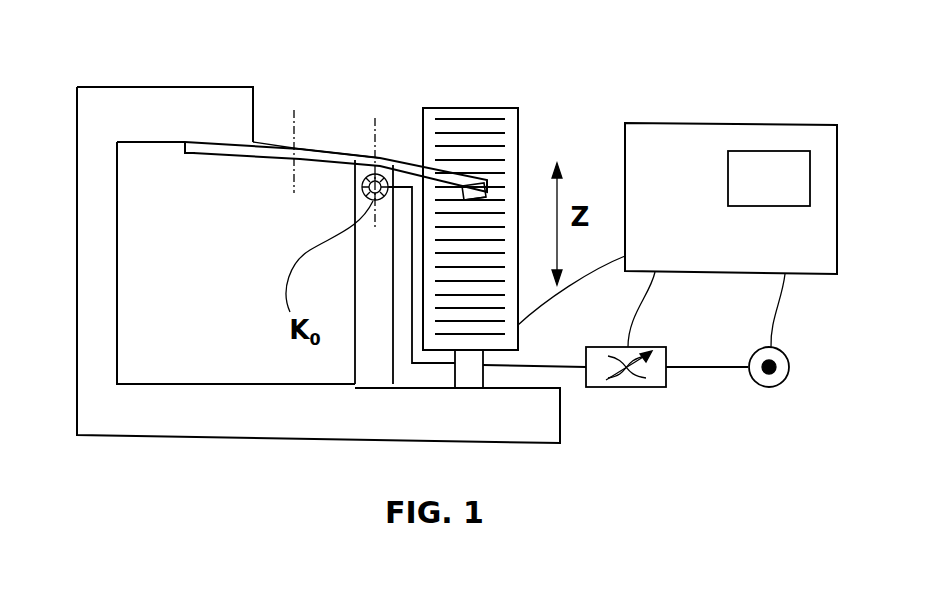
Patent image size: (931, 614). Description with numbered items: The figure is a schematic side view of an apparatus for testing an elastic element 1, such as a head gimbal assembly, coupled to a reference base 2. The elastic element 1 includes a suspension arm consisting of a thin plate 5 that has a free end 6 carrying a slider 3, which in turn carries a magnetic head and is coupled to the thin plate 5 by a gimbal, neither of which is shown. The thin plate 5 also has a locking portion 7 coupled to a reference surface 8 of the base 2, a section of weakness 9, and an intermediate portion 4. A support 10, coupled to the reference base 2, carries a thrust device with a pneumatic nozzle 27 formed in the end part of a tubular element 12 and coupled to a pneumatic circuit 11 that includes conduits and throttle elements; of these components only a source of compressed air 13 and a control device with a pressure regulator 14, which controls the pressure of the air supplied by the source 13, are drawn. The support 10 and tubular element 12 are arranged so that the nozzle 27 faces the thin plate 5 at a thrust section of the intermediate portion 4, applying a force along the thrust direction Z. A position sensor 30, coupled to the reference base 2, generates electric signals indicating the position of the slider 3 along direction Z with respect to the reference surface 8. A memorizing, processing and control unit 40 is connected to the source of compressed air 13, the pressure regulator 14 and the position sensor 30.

The elastic element 1 is at (303, 140).
The reference base 2 is at (177, 398).
The slider 3 is at (470, 203).
The intermediate portion 4 is at (323, 162).
The thin plate 5 is at (273, 148).
The free end 6 is at (486, 184).
The locking portion 7 is at (196, 154).
The reference surface 8 is at (151, 143).
The section of weakness 9 is at (293, 157).
The support 10 is at (355, 365).
The pneumatic circuit 11 is at (558, 375).
The tubular element 12 is at (333, 147).
The source of compressed air 13 is at (785, 378).
The pressure regulator 14 is at (656, 375).
The pneumatic nozzle 27 is at (377, 175).
The position sensor 30 is at (470, 110).
The memorizing, processing and control unit 40 is at (762, 132).